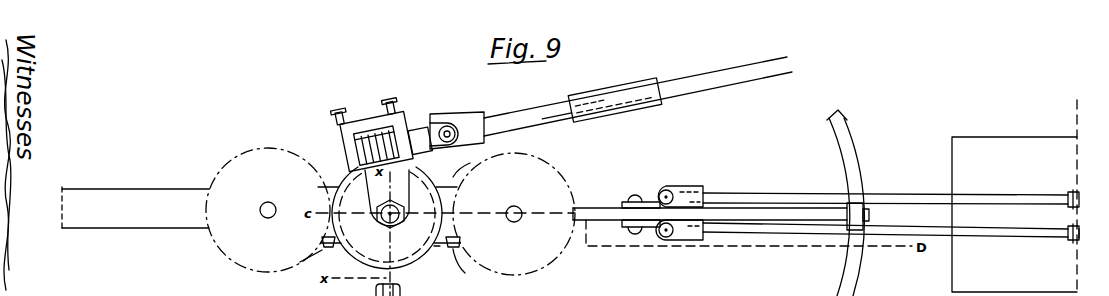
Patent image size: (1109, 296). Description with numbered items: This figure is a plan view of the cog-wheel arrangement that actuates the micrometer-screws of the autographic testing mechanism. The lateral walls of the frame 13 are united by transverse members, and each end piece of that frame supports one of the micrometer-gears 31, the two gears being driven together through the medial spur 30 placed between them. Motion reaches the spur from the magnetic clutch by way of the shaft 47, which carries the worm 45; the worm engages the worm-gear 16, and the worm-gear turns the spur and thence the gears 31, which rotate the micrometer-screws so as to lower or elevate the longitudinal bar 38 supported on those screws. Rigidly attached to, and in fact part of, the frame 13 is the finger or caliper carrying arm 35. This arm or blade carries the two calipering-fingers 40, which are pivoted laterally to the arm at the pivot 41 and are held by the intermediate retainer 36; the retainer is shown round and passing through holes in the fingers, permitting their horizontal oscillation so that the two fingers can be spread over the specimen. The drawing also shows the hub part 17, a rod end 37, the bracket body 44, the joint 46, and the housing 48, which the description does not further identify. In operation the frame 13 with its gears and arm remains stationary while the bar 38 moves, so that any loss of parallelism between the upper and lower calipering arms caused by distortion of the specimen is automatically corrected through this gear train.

The frame 13 is at (392, 219).
The worm-gear 16 is at (350, 249).
The hub nut 17 is at (405, 210).
The medial spur 30 is at (435, 254).
The micrometer-gears 31 is at (390, 211).
The caliper carrying arm 35 is at (607, 218).
The intermediate retainer 36 is at (862, 258).
The rod end 37 is at (1080, 233).
The longitudinal bar 38 is at (153, 217).
The calipering-fingers 40 is at (766, 194).
The pivot 41 is at (668, 192).
The bracket body 44 is at (342, 134).
The worm 45 is at (357, 147).
The universal joint 46 is at (445, 117).
The shaft 47 is at (733, 79).
The housing 48 is at (1014, 196).